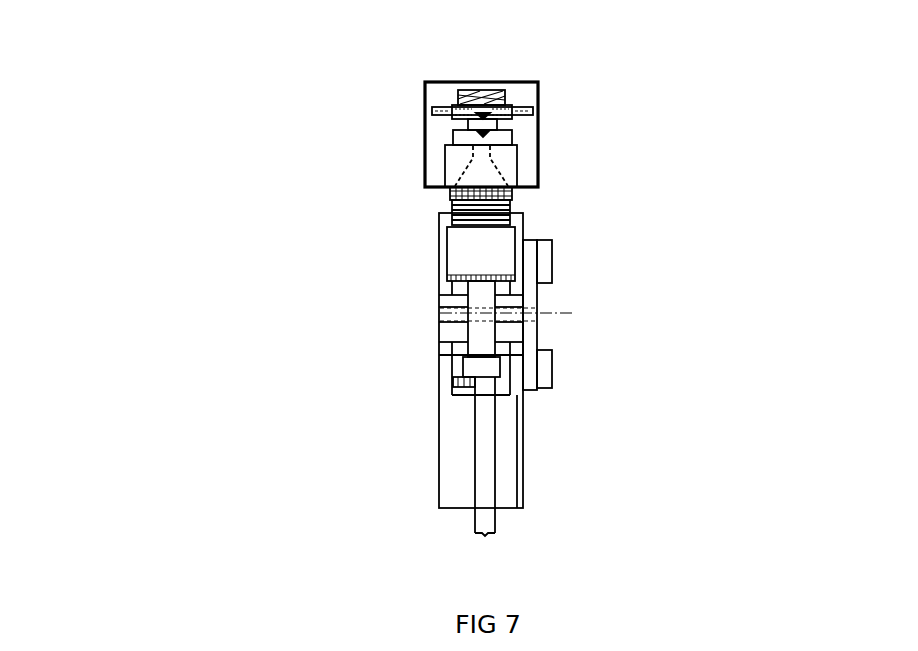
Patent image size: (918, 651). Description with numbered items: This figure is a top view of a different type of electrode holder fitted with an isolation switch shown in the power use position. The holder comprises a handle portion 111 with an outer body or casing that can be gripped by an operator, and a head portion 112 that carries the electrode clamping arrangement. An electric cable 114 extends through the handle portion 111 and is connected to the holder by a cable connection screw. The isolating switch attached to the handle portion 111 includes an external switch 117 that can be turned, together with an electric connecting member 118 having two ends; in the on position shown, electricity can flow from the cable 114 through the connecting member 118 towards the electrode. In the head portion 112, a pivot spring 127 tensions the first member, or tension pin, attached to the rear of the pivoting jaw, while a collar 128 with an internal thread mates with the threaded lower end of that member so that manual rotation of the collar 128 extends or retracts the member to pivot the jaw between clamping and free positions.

The handle portion 111 is at (418, 380).
The head portion 112 is at (382, 118).
The pivot spring 127 is at (452, 84).
The collar 128 is at (495, 253).
The external switch 117 is at (494, 330).
The electric connecting member 118 is at (533, 262).
The electric cable 114 is at (485, 440).